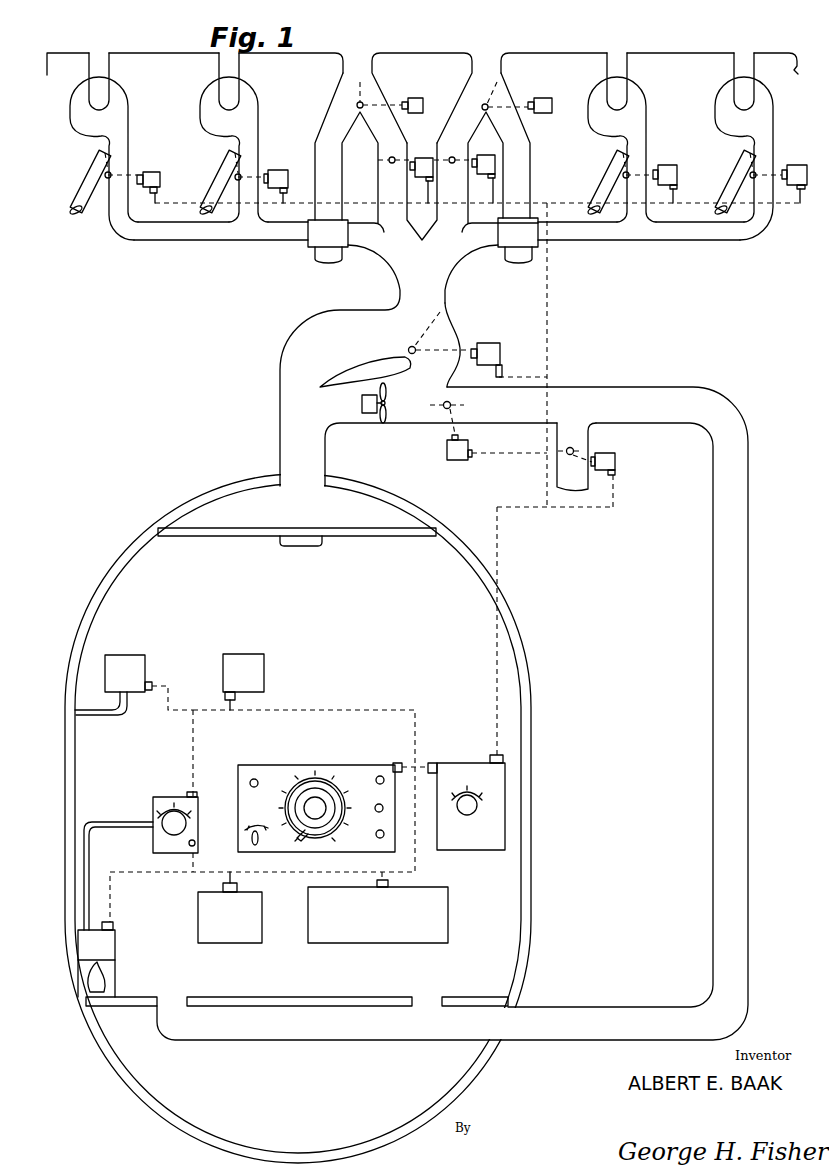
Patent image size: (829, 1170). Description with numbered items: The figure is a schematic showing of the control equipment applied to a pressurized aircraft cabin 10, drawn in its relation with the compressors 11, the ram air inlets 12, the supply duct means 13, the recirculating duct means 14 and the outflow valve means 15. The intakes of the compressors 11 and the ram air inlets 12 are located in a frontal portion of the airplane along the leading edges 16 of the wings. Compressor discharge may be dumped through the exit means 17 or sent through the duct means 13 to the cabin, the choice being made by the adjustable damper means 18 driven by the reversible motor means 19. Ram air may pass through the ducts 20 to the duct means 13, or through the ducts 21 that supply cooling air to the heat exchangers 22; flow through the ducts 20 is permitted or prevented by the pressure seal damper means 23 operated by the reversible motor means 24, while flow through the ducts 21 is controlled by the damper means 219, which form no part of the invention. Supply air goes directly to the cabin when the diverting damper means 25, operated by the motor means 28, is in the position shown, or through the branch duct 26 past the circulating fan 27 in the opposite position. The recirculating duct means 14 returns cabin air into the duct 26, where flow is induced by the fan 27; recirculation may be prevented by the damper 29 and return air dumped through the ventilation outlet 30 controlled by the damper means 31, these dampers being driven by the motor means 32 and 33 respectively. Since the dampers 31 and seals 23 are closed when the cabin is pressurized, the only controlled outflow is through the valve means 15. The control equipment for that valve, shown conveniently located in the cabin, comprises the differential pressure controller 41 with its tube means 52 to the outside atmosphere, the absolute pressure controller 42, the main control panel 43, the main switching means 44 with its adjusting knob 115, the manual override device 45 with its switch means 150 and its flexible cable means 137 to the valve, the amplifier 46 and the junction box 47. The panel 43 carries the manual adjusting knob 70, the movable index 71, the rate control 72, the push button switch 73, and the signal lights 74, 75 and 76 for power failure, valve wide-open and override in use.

The cabin 10 is at (532, 677).
The compressors 11 is at (120, 108).
The ram air inlets 12 is at (357, 52).
The supply duct means 13 is at (290, 377).
The recirculating duct means 14 is at (622, 1007).
The outflow valve means 15 is at (115, 967).
The leading edges 16 is at (565, 50).
The exit means 17 is at (92, 178).
The adjustable damper means 18 is at (138, 162).
The reversible motor means 19 is at (155, 172).
The ducts 20 is at (450, 128).
The ducts 21 is at (327, 122).
The heat exchangers 22 is at (315, 248).
The pressure seal damper means 23 is at (371, 168).
The reversible motor means 24 is at (423, 157).
The diverting damper means 25 is at (460, 317).
The branch duct 26 is at (398, 415).
The circulating fan 27 is at (362, 403).
The reversible motor means 28 is at (494, 343).
The damper 29 is at (432, 435).
The ventilation outlet 30 is at (562, 475).
The damper means 31 is at (602, 439).
The reversible motor means 32 is at (450, 462).
The reversible motor means 33 is at (615, 461).
The differential pressure controller 41 is at (123, 660).
The absolute pressure controller 42 is at (264, 670).
The main control panel 43 is at (280, 774).
The main switching means 44 is at (458, 768).
The manual override device 45 is at (158, 796).
The amplifier 46 is at (378, 944).
The junction box 47 is at (243, 944).
The tube means 52 is at (100, 714).
The manual adjusting knob 70 is at (323, 811).
The movable index 71 is at (322, 836).
The rate control 72 is at (252, 838).
The push button switch 73 is at (254, 779).
The signal light 74 is at (380, 776).
The signal light 75 is at (377, 805).
The signal light 76 is at (377, 831).
The adjusting knob 115 is at (468, 814).
The flexible cable means 137 is at (113, 822).
The single pole double throw switch means 150 is at (195, 841).
The sensor linkage 219 is at (388, 82).